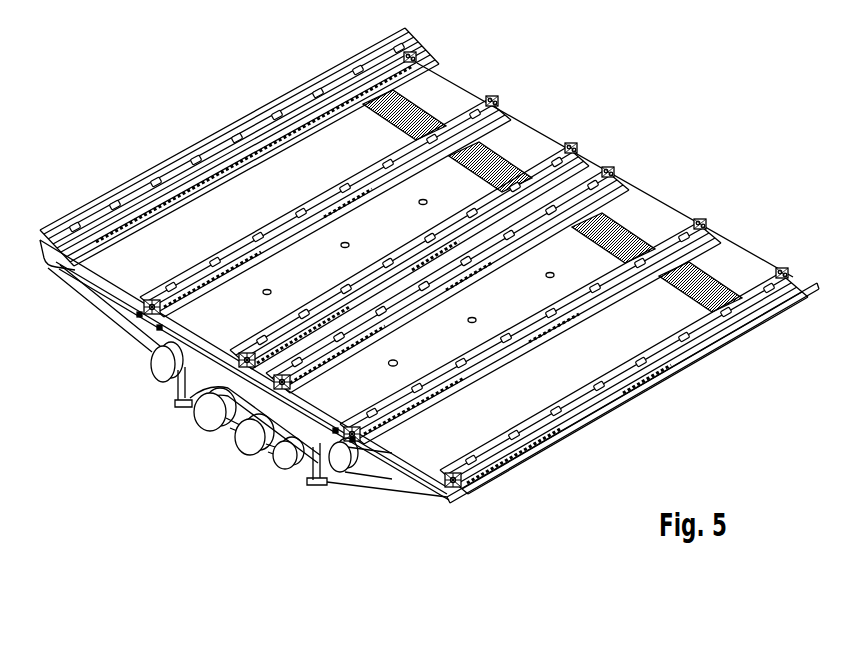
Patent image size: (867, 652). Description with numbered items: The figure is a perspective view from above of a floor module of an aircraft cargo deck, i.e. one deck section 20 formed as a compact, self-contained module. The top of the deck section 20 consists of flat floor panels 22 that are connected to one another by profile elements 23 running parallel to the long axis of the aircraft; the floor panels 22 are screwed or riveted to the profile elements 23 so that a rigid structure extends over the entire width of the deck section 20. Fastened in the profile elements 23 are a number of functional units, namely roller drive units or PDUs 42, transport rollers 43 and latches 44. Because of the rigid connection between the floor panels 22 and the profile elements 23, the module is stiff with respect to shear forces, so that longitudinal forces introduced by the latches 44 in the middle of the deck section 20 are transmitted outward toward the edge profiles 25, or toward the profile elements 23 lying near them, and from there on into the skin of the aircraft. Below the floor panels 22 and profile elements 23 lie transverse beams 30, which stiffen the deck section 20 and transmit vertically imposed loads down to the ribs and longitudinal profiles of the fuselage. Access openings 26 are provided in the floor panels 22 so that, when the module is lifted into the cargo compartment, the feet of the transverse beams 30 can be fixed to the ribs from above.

The deck section 20 is at (518, 472).
The floor panels 22 is at (519, 401).
The profile elements 23 is at (420, 62).
The edge profiles 25 is at (290, 93).
The access openings 26 is at (396, 361).
The transverse beams 30 is at (217, 379).
The PDUs 42 is at (550, 334).
The transport rollers 43 is at (687, 333).
The latches 44 is at (309, 370).